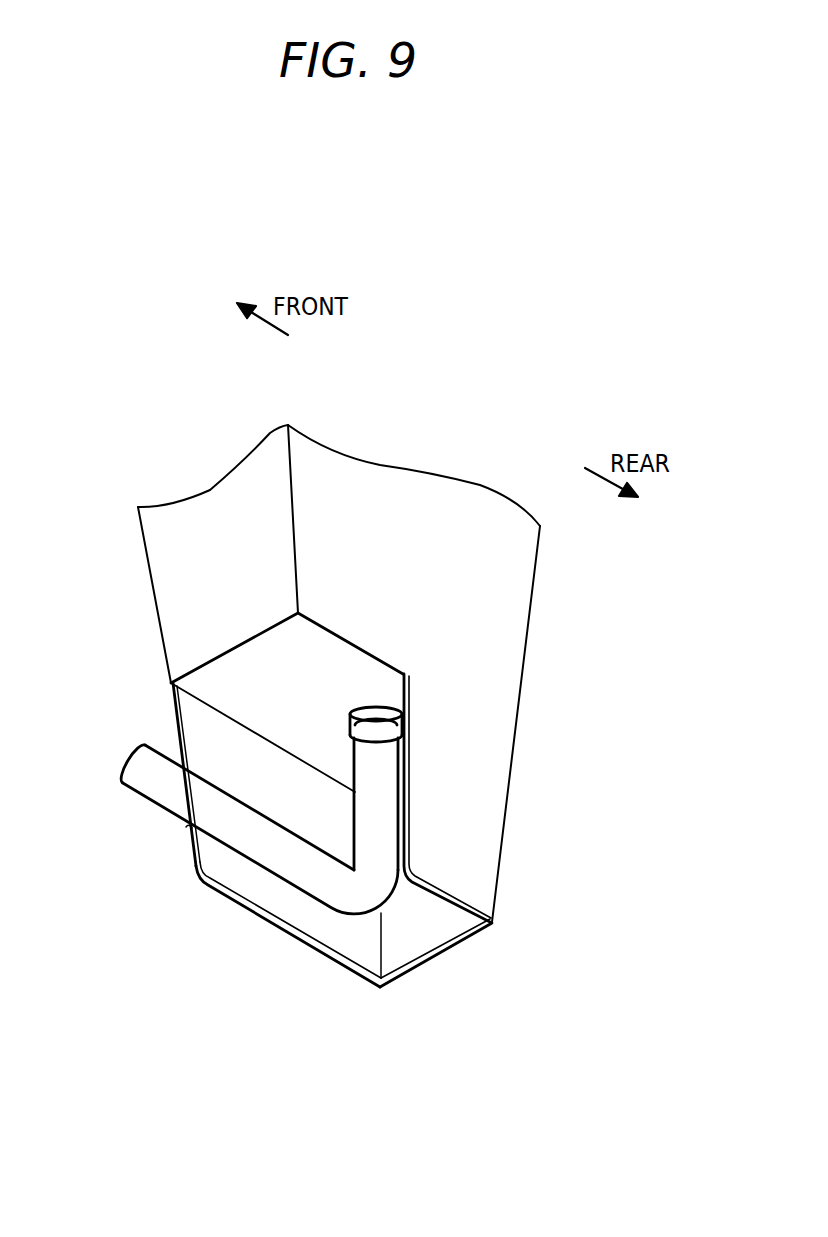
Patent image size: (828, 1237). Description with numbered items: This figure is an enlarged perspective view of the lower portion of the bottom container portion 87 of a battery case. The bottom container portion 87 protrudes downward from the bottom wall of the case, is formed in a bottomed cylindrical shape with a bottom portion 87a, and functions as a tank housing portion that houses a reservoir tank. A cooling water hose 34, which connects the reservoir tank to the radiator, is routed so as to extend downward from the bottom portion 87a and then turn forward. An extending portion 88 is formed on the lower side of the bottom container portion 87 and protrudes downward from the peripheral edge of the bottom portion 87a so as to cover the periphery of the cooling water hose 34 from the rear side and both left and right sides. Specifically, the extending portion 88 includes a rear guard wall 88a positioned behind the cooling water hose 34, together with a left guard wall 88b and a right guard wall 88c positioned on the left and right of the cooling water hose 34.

The bottom container portion 87 is at (490, 602).
The bottom portion 87a is at (243, 699).
The extending portion 88 is at (384, 855).
The rear guard wall 88a is at (437, 932).
The left guard wall 88b is at (473, 820).
The right guard wall 88c is at (315, 915).
The cooling water hose 34 is at (245, 840).